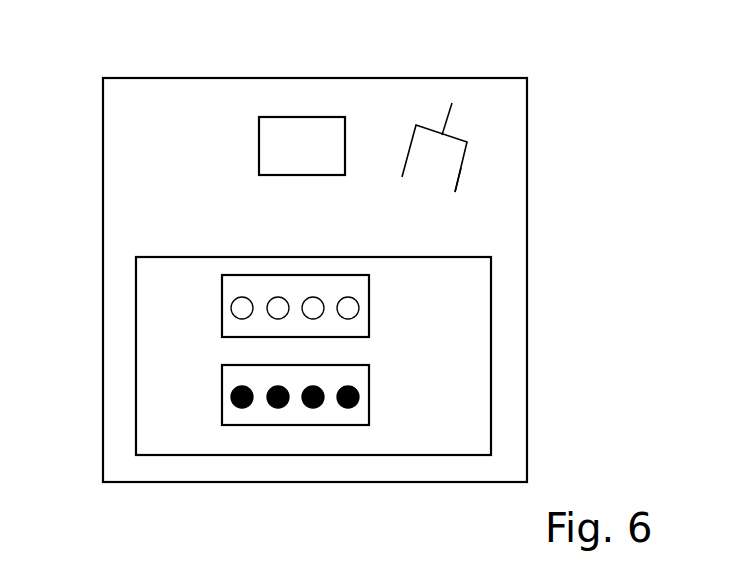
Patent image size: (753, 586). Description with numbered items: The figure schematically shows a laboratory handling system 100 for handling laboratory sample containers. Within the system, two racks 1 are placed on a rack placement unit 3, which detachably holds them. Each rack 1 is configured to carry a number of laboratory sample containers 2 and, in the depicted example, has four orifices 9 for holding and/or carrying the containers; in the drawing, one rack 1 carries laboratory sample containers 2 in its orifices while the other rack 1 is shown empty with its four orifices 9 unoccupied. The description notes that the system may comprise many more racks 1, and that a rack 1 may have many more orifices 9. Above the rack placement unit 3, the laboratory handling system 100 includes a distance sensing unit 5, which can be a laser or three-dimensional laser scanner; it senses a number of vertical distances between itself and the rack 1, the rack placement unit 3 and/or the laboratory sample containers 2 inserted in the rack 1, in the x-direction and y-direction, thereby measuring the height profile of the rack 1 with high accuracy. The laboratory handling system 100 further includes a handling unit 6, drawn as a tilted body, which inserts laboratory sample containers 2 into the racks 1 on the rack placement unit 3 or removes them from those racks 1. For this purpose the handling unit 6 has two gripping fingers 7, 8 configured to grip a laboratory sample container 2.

The laboratory handling system 100 is at (215, 78).
The distance sensing unit 5 is at (310, 158).
The rack placement unit 3 is at (491, 293).
The rack 1 is at (221, 290).
The orifice 9 is at (230, 305).
The laboratory sample container 2 is at (230, 397).
The gripping finger 8 is at (408, 148).
The handling unit 6 is at (448, 120).
The gripping finger 7 is at (463, 173).